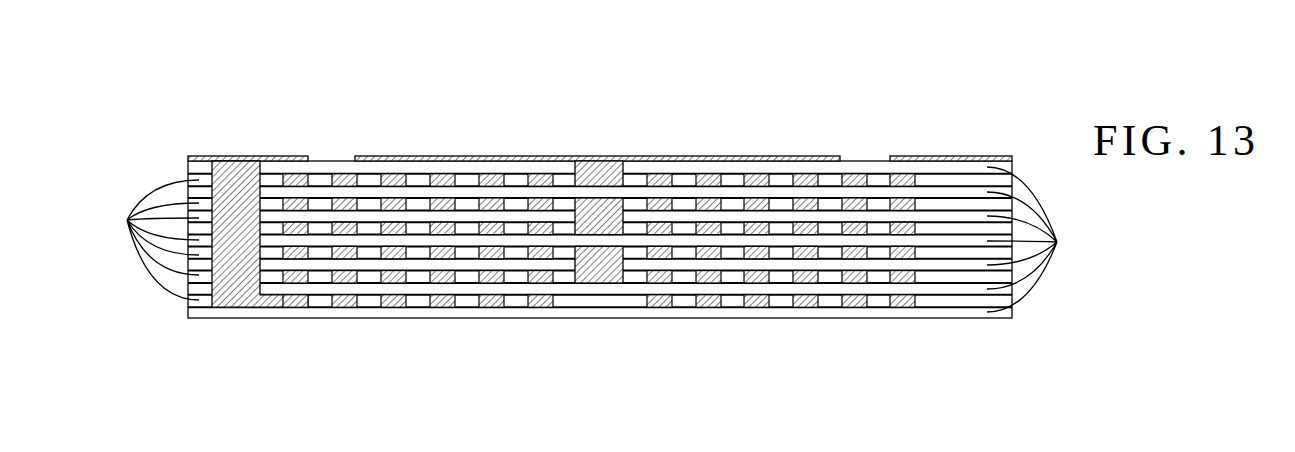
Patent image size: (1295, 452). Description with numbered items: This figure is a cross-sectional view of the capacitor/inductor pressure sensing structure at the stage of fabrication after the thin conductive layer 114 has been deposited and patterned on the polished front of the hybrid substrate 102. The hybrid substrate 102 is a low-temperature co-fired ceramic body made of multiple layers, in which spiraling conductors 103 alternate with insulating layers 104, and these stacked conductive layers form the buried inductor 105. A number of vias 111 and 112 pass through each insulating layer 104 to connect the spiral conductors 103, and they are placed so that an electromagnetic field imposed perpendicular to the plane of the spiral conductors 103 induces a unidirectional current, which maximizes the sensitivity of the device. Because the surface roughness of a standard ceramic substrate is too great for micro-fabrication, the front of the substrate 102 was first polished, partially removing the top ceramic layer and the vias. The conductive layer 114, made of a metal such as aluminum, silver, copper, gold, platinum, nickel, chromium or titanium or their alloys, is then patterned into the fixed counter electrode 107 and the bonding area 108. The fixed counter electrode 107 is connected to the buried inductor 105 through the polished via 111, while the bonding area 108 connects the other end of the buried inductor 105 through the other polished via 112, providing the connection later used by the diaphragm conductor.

The hybrid substrate 102 is at (402, 318).
The spiraling conductors 103 is at (127, 220).
The insulating layers 104 is at (1043, 239).
The buried inductor 105 is at (808, 308).
The fixed counter electrode 107 is at (793, 158).
The bonding area 108 is at (245, 157).
The via 111 is at (602, 172).
The via 112 is at (240, 270).
The conductive layer 114 is at (537, 127).